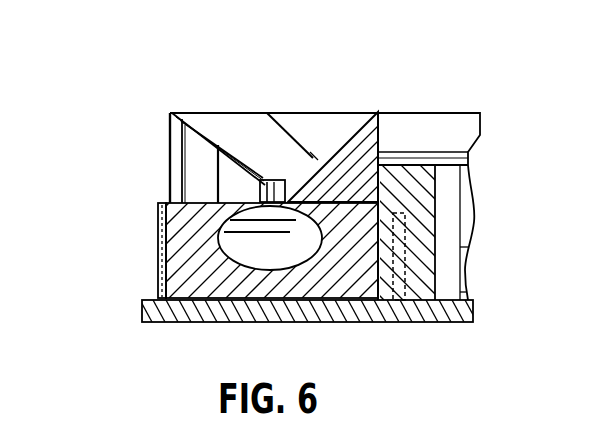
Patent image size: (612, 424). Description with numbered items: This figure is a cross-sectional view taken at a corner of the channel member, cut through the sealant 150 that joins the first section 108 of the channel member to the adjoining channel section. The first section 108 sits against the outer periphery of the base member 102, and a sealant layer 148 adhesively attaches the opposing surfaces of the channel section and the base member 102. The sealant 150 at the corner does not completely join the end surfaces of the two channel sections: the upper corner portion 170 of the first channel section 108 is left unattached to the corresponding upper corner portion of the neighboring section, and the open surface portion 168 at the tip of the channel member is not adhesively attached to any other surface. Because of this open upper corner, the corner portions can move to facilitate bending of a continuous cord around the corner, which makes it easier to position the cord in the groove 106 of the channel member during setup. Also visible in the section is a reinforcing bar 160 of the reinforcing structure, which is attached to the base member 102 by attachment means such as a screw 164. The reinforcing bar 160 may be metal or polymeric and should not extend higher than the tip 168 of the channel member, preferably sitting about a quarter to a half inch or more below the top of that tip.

The base member 102 is at (245, 323).
The groove 106 is at (287, 260).
The first section of channel member 108 is at (263, 123).
The sealant layer 148 is at (160, 297).
The sealant 150 is at (372, 113).
The reinforcing bar 160 is at (402, 214).
The screw 164 is at (410, 302).
The open surface portion / tip 168 is at (190, 160).
The upper corner portion of first channel section 170 is at (170, 127).